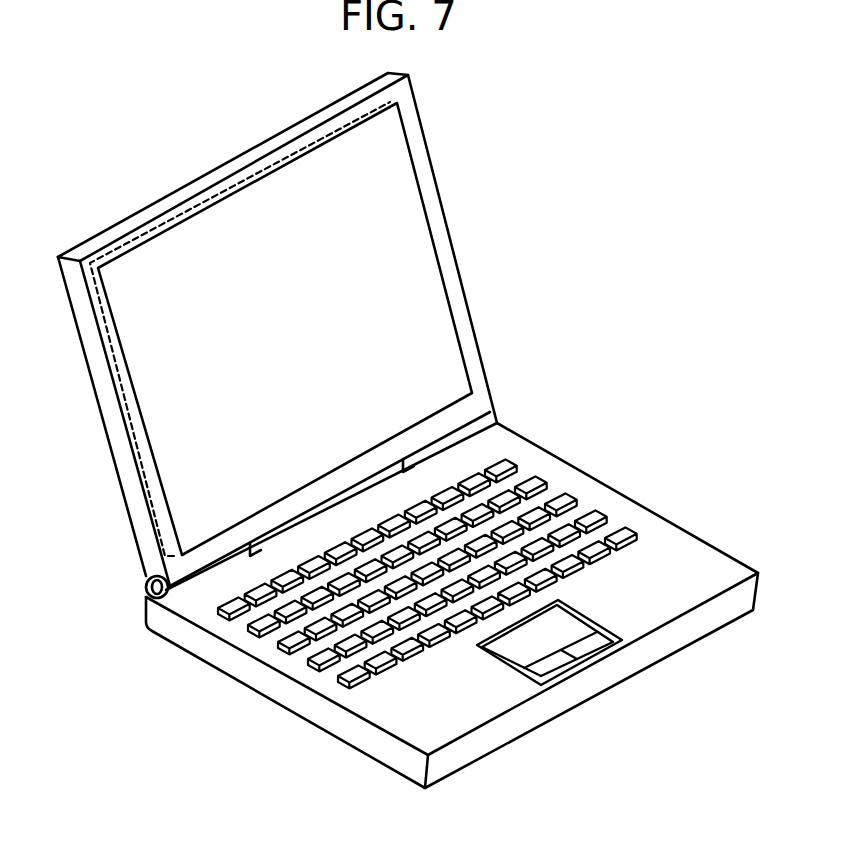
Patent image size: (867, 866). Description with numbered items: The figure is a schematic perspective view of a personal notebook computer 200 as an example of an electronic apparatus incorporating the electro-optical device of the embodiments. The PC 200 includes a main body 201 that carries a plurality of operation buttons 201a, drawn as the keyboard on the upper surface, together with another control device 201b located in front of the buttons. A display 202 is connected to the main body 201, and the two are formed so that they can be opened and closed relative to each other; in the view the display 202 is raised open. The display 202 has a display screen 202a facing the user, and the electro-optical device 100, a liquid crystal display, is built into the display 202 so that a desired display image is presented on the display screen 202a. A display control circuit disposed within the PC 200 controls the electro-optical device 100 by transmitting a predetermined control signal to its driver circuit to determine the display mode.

The electro-optical device 100 is at (180, 197).
The personal notebook computer 200 is at (583, 100).
The main body 201 is at (667, 523).
The operation buttons 201a is at (522, 470).
The other control device 201b is at (577, 633).
The display 202 is at (120, 461).
The display screen 202a is at (430, 318).